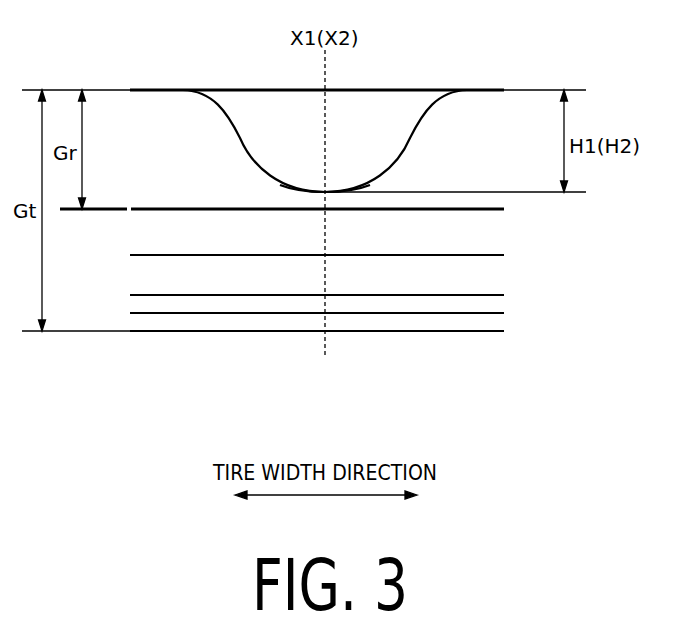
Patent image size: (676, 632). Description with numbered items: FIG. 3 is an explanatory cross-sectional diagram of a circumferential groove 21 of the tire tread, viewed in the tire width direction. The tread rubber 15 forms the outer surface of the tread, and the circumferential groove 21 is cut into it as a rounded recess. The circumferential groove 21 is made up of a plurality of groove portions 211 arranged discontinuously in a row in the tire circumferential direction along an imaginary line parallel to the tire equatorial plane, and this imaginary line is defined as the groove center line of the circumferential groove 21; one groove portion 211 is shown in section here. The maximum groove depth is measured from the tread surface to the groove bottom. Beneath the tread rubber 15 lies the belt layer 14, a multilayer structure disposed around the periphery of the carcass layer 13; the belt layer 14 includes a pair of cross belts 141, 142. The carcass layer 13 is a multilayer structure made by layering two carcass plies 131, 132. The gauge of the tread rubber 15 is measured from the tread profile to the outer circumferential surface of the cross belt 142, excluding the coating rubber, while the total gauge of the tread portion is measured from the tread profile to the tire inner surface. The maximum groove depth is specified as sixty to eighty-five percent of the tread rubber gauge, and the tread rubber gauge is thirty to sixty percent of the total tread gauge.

The tread rubber 15 is at (155, 89).
The first circumferential groove 21 is at (400, 63).
The groove portion 211 is at (265, 95).
The belt layer 14 is at (317, 347).
The cross belt 141 is at (225, 296).
The cross belt 142 is at (278, 256).
The carcass layer 13 is at (327, 376).
The carcass ply 131 is at (524, 395).
The carcass ply 132 is at (458, 314).